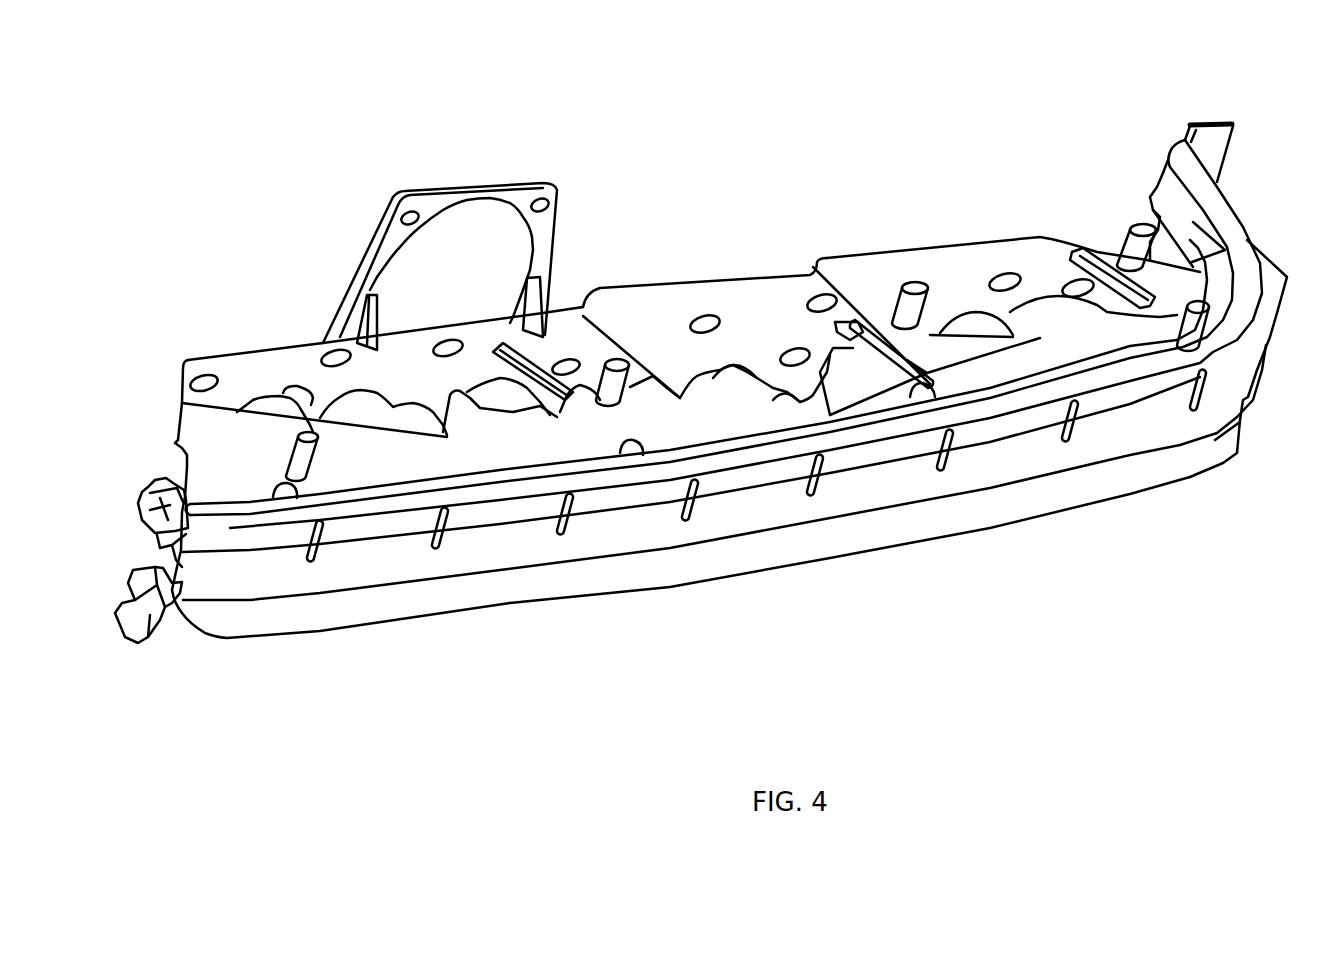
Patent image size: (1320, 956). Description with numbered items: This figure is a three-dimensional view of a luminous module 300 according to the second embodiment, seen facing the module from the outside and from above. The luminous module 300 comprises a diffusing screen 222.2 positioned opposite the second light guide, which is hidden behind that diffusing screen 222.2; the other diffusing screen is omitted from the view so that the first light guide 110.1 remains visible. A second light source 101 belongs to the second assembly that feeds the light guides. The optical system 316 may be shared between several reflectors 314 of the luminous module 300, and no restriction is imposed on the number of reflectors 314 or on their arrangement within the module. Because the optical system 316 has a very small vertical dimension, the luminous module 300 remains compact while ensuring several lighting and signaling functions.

The second light source 101 is at (1190, 170).
The reflector 314 is at (510, 397).
The first light guide 110.1 is at (468, 518).
The optical system 316 is at (350, 573).
The diffusing screen 222.2 is at (572, 580).
The luminous module 300 is at (701, 417).